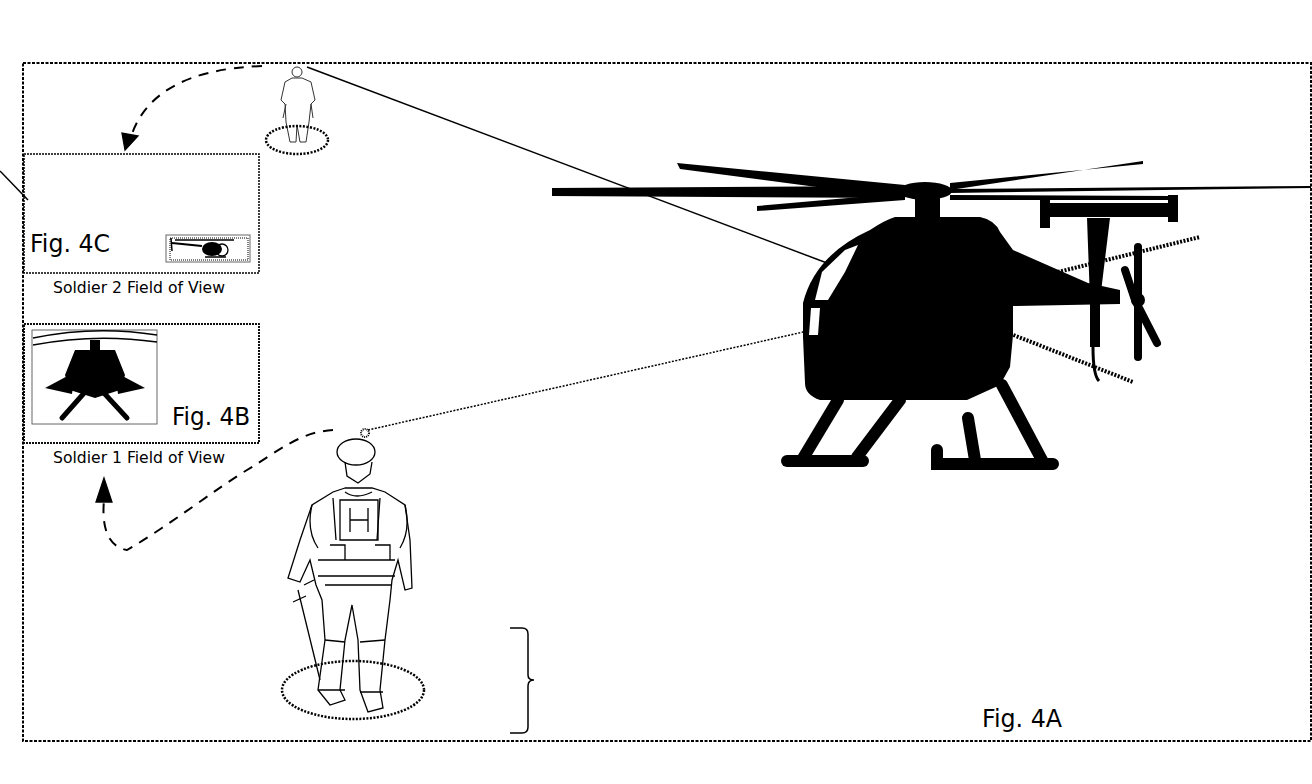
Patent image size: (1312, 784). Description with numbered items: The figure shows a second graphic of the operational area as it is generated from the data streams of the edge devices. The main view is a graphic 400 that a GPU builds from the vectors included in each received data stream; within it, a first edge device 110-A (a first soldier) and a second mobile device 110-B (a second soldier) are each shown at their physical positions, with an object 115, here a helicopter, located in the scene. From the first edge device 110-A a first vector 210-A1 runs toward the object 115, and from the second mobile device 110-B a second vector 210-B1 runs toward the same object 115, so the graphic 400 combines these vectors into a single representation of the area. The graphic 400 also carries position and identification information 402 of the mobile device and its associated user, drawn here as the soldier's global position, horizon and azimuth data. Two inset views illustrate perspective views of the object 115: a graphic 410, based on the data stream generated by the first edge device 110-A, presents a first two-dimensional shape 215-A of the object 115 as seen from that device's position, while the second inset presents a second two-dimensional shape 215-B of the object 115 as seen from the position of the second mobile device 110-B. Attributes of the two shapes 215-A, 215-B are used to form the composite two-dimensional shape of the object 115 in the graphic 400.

In FIG. 4A, the first edge device 110-A is at (291, 574).
In FIG. 4A, the second mobile device 110-B is at (309, 133).
In FIG. 4A, the object 115 is at (931, 312).
In FIG. 4A, the first vector 210-A1 is at (650, 401).
In FIG. 4A, the second vector 210-B1 is at (567, 174).
In FIG. 4B, the first two-dimensional shape 215-A is at (141, 376).
In FIG. 4C, the second two-dimensional shape 215-B is at (186, 211).
In FIG. 4A, the graphic 400 is at (859, 652).
In FIG. 4A, the position and identification information 402 is at (534, 680).
In FIG. 4A, the graphic 410 is at (178, 383).